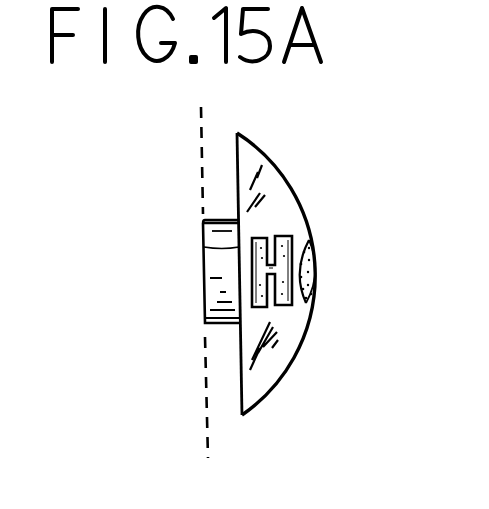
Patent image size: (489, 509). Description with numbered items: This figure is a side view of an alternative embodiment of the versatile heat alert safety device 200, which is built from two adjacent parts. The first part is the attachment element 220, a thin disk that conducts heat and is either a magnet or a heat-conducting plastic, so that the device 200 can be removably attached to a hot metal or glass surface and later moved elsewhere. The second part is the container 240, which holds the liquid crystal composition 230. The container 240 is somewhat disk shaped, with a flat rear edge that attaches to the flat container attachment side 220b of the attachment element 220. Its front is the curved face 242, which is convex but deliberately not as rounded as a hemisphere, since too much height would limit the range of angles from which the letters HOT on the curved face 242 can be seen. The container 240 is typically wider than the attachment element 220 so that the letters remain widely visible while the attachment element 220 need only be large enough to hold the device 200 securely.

The versatile heat alert safety device 200 is at (310, 333).
The attachment element 220 is at (203, 278).
The flat container attachment side 220b is at (204, 247).
The liquid crystal composition 230 is at (312, 248).
The container 240 is at (285, 212).
The curved face 242 is at (277, 152).